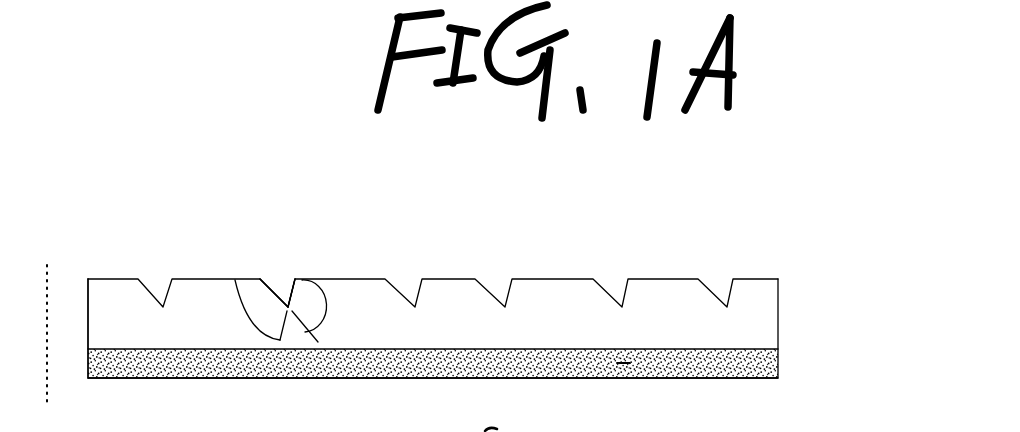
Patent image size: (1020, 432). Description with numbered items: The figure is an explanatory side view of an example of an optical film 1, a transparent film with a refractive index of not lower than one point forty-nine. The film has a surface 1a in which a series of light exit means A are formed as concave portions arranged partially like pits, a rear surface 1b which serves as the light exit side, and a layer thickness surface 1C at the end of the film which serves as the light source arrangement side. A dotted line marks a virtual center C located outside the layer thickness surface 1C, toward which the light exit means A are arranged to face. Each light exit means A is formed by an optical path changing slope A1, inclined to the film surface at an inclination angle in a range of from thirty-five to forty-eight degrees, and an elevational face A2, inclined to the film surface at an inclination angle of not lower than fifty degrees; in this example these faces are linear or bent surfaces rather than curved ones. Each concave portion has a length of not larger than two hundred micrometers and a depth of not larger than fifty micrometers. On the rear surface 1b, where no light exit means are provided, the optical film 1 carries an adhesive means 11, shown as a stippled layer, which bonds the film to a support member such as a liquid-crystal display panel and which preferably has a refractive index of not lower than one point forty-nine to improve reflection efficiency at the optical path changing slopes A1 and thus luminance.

The optical film 1 is at (747, 331).
The surface 1a is at (685, 279).
The rear surface 1b is at (703, 352).
The layer thickness surface 1C is at (87, 295).
The adhesive means 11 is at (606, 369).
The virtual center C is at (267, 335).
The light exit means A is at (295, 276).
The optical path changing slope A1 is at (270, 292).
The elevational face A2 is at (297, 292).